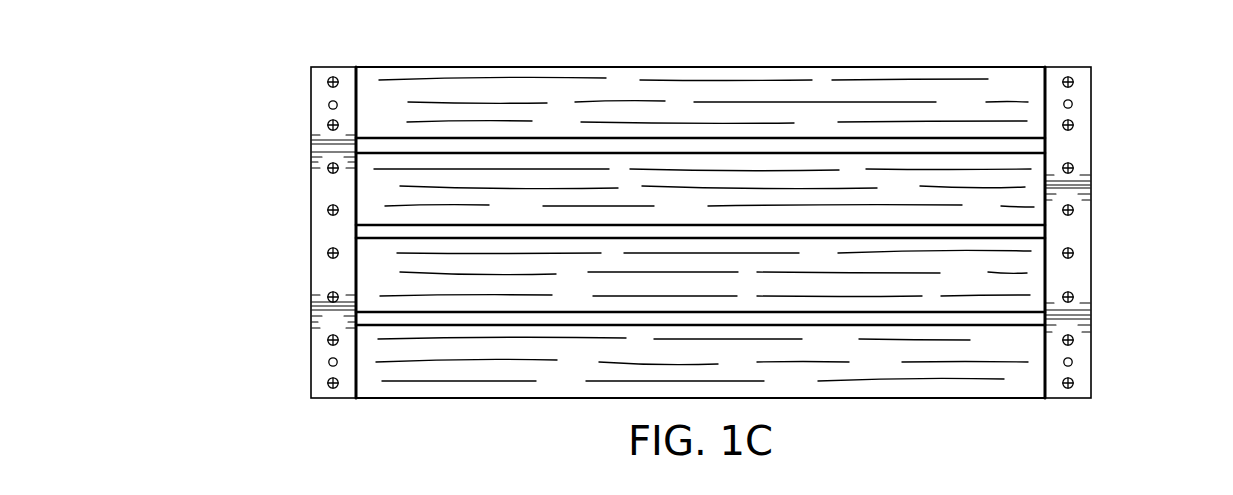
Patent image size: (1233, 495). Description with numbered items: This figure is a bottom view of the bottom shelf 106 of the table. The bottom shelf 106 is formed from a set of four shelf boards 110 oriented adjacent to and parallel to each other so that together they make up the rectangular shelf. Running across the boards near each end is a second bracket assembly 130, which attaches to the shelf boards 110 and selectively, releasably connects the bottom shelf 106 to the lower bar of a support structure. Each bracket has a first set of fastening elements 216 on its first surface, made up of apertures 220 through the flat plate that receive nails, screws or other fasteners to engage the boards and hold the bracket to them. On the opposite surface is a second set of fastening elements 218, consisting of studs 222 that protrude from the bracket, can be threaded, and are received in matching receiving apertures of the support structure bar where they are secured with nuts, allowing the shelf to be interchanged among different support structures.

The bottom shelf 106 is at (185, 167).
The shelf boards 110 is at (845, 153).
The second bracket assembly 130 is at (1092, 233).
The first set of fastening elements 216 is at (263, 232).
The apertures 220 is at (328, 86).
The second set of fastening elements 218 is at (1138, 232).
The studs 222 is at (1073, 104).